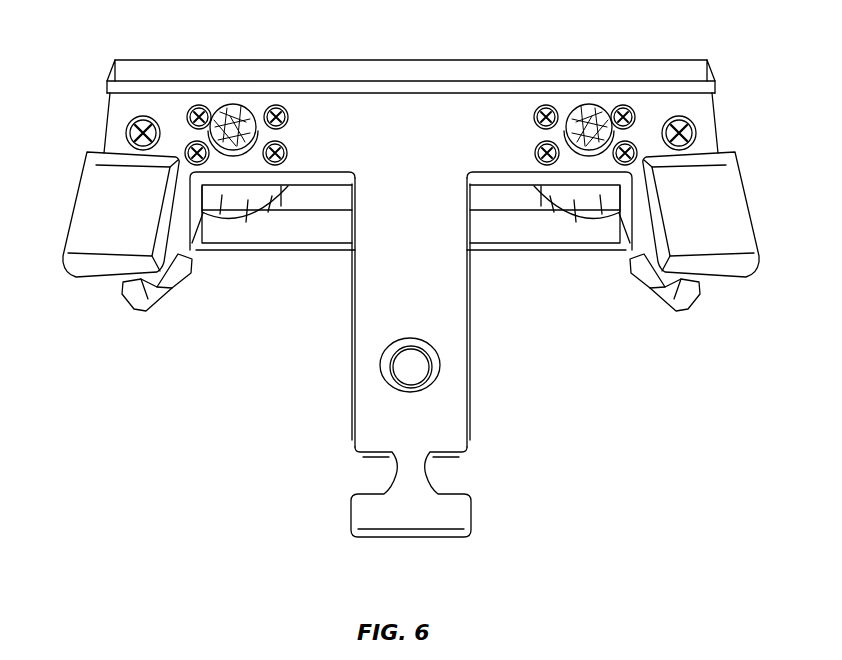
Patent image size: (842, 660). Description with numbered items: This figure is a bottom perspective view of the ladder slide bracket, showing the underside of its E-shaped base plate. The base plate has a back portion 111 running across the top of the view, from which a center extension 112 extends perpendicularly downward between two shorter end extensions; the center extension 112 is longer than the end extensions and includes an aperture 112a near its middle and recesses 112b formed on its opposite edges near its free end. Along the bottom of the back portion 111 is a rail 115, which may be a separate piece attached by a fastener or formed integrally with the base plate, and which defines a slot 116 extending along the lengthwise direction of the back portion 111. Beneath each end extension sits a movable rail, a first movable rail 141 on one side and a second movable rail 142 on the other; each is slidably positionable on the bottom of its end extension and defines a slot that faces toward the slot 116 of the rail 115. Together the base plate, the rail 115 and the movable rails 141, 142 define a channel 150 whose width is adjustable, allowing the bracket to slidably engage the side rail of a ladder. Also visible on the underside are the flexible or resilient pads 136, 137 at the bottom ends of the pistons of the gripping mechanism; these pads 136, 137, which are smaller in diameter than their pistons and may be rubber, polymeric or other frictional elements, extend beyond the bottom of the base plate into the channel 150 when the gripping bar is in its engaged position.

The channel 150 is at (724, 102).
The rail 115 is at (390, 68).
The slot 116 is at (122, 95).
The back portion 111 is at (429, 142).
The center extension 112 is at (431, 257).
The aperture 112a is at (393, 348).
The recesses 112b is at (434, 451).
The pad 136 is at (566, 121).
The pad 137 is at (289, 119).
The first movable rail 141 is at (724, 224).
The second movable rail 142 is at (132, 224).